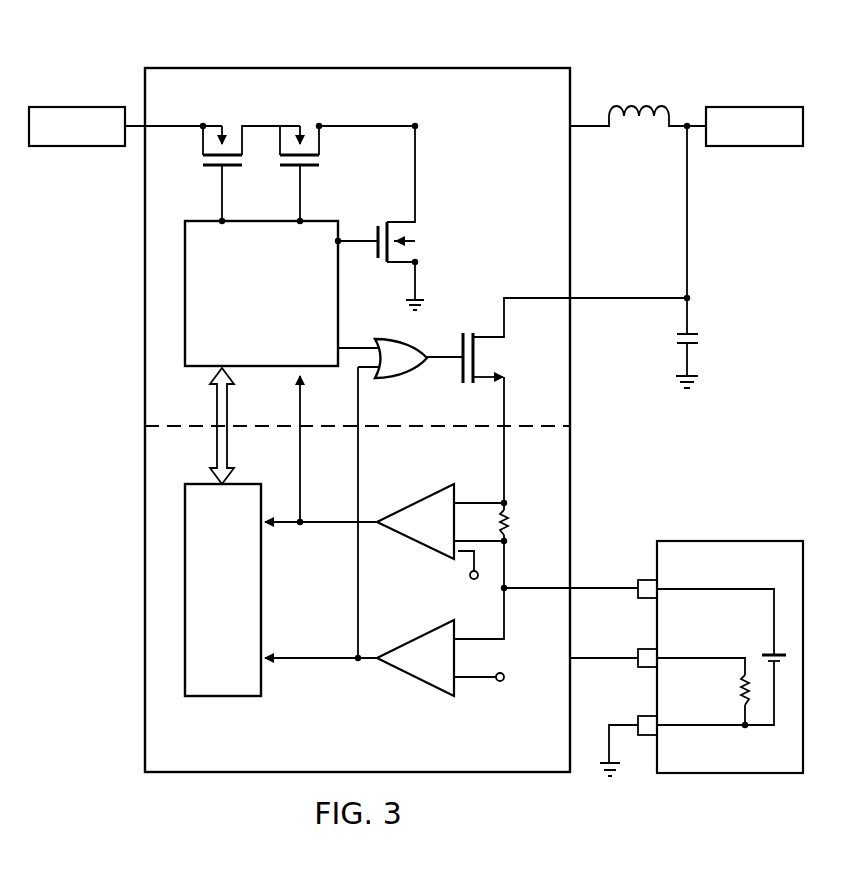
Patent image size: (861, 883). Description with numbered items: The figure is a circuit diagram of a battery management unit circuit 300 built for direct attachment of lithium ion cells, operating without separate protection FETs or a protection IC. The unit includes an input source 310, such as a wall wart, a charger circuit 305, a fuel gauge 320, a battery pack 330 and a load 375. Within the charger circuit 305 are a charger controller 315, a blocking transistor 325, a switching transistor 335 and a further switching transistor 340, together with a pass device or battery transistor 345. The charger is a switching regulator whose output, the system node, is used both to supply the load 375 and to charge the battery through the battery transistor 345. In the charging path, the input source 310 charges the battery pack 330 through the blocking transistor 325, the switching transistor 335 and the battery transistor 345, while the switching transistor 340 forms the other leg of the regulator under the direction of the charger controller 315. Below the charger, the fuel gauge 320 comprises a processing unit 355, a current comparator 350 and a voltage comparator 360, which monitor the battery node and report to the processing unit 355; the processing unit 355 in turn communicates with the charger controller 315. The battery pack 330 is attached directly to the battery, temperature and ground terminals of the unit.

The battery management unit circuit 300 is at (660, 52).
The charger circuit 305 is at (472, 109).
The input source 310 is at (77, 106).
The charger controller 315 is at (280, 334).
The fuel gauge 320 is at (488, 758).
The blocking transistor 325 is at (213, 168).
The battery pack 330 is at (732, 778).
The switching transistor 335 is at (291, 168).
The switching transistor 340 is at (365, 228).
The battery transistor 345 is at (460, 333).
The current comparator 350 is at (415, 545).
The processing unit 355 is at (241, 620).
The voltage comparator 360 is at (415, 681).
The load 375 is at (755, 106).